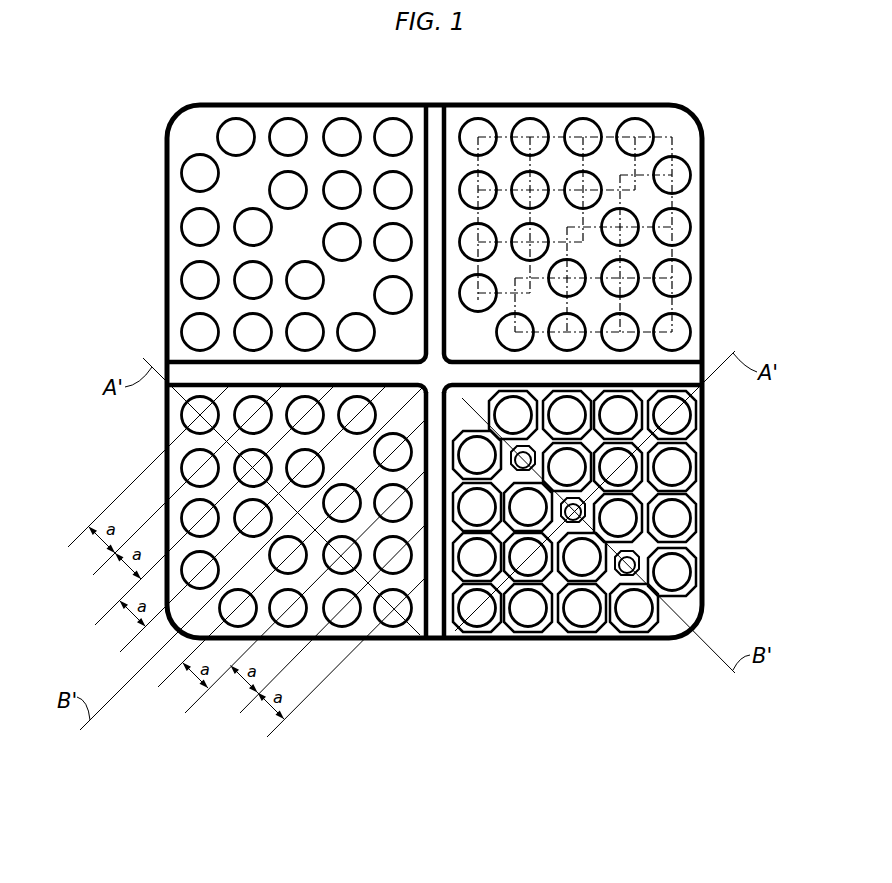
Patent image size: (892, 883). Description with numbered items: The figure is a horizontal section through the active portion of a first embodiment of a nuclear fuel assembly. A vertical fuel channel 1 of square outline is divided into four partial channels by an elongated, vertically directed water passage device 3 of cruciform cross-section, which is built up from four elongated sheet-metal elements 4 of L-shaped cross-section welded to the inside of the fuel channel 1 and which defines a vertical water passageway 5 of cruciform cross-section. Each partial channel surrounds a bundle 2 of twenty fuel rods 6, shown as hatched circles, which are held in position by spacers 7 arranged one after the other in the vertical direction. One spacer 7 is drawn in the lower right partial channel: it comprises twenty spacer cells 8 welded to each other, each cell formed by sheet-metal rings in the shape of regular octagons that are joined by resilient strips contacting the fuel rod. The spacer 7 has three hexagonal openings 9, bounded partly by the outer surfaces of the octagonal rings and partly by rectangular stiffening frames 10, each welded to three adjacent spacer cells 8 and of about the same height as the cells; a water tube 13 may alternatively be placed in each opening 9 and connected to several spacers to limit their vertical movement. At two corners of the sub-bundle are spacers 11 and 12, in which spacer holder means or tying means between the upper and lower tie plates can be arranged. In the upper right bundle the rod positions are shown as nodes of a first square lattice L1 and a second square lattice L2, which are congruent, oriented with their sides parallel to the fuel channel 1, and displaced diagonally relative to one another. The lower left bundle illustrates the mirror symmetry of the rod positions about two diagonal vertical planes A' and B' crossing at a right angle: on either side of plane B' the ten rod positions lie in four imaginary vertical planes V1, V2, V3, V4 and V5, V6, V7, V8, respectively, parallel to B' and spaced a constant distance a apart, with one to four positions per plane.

The fuel channel 1 is at (703, 145).
The bundle 2 is at (190, 132).
The water passage device 3 is at (432, 165).
The sheet-metal element 4 is at (433, 172).
The water passageway 5 is at (676, 369).
The fuel rod 6 is at (686, 265).
The spacer 7 is at (690, 594).
The spacer cell 8 is at (692, 490).
The hexagonal opening 9 is at (637, 592).
The stiffening frame 10 is at (592, 624).
The spacer 11 is at (462, 398).
The spacer 12 is at (670, 630).
The water tube 13 is at (590, 516).
The first square lattice L1 is at (556, 134).
The second square lattice L2 is at (676, 306).
The imaginary vertical plane V1 is at (136, 476).
The imaginary vertical plane V2 is at (176, 489).
The imaginary vertical plane V3 is at (202, 517).
The imaginary vertical plane V4 is at (242, 530).
The imaginary vertical plane V5 is at (279, 565).
The imaginary vertical plane V6 is at (292, 603).
The imaginary vertical plane V7 is at (319, 630).
The imaginary vertical plane V8 is at (333, 670).